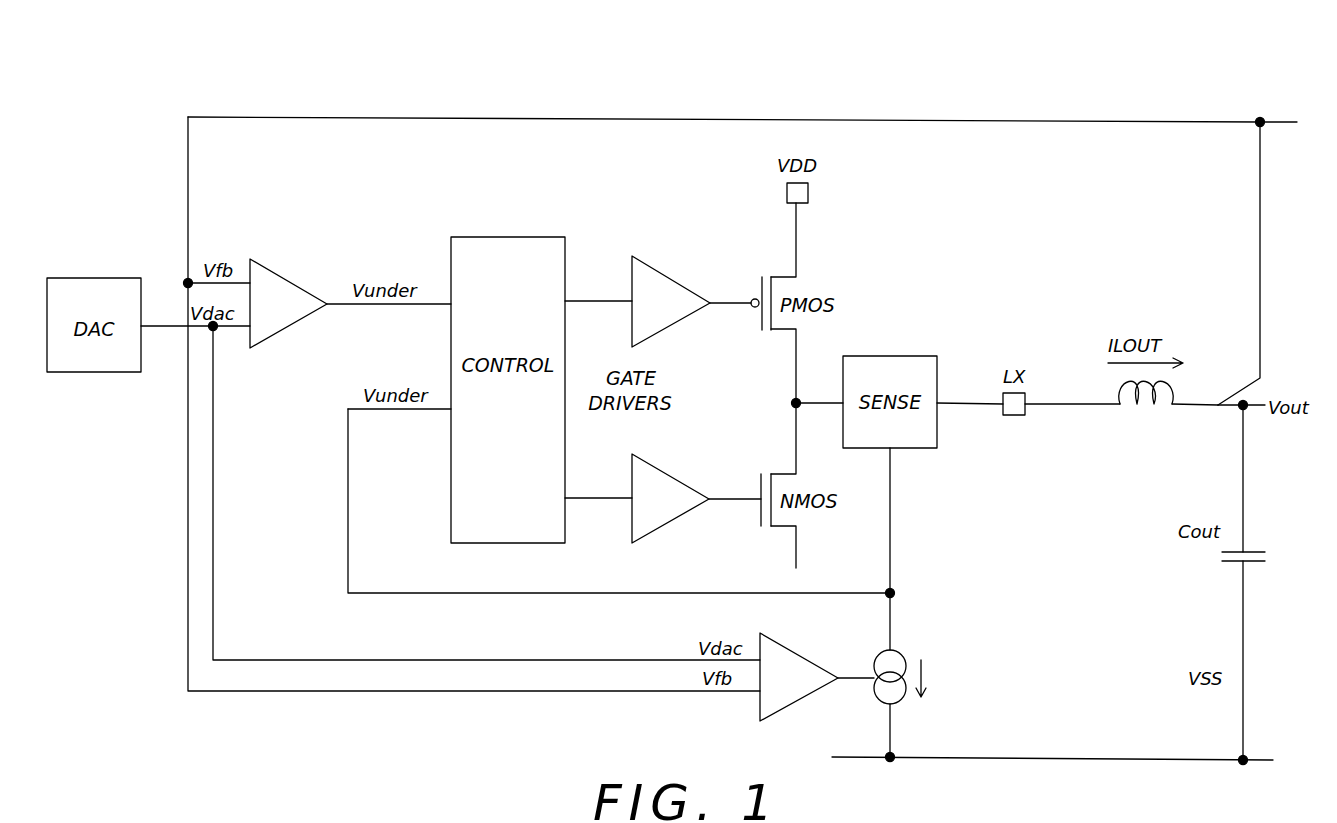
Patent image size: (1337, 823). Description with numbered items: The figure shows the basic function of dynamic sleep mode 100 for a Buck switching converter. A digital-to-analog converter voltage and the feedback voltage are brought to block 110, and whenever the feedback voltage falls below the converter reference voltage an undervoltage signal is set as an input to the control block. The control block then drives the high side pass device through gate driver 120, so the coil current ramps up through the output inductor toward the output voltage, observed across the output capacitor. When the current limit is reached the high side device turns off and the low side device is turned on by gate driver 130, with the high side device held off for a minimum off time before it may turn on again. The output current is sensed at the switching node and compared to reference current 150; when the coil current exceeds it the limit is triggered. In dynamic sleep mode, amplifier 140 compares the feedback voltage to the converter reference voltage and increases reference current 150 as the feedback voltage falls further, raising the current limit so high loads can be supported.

The dynamic sleep mode 100 is at (322, 90).
The error amplifier 110 is at (306, 284).
The gate driver 120 is at (688, 282).
The gate driver 130 is at (688, 481).
The amplifier 140 is at (817, 658).
The reference current 150 is at (925, 672).